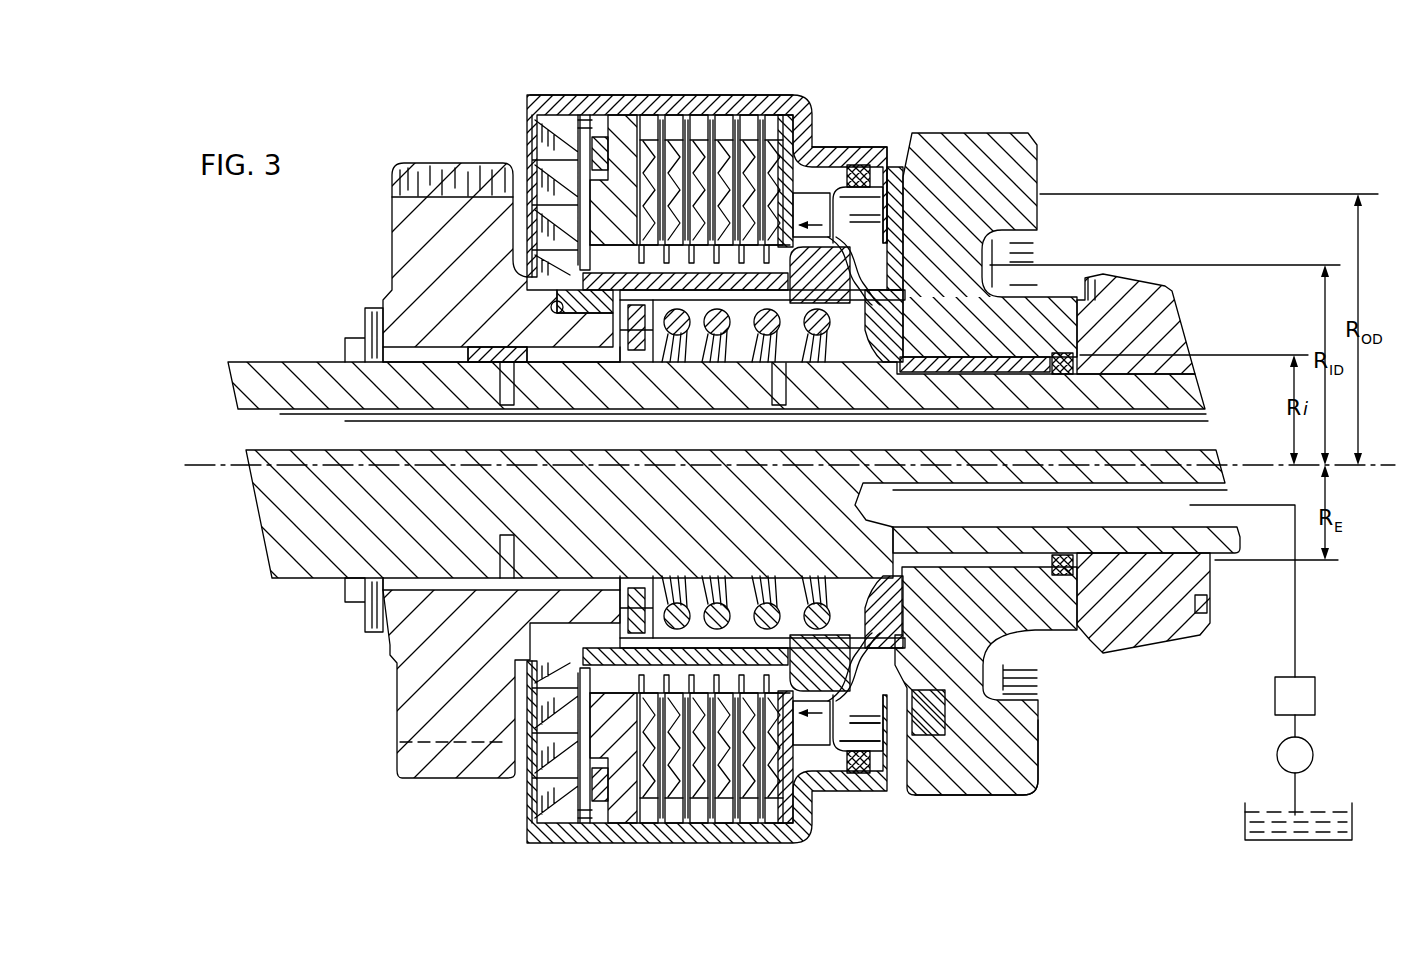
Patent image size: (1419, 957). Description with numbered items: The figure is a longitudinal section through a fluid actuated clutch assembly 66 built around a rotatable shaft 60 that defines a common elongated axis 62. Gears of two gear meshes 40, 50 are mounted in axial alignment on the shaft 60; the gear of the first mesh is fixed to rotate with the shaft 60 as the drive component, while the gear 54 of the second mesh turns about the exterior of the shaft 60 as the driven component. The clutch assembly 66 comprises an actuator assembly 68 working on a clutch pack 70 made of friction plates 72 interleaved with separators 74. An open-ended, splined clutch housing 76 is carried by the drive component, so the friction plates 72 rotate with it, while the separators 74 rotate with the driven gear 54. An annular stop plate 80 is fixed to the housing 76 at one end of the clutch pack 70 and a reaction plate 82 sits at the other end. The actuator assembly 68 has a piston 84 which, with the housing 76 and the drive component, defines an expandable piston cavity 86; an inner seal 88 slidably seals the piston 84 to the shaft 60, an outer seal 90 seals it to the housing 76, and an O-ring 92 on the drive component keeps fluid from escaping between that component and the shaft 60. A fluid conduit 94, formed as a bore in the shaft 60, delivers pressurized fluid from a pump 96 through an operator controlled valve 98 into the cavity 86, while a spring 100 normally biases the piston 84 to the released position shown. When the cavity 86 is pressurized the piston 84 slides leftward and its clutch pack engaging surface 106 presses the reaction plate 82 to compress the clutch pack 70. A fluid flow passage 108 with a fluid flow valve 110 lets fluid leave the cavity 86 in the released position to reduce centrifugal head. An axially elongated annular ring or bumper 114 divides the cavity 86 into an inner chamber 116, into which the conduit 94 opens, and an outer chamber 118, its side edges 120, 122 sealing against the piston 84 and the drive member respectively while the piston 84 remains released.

The gear mesh 40 is at (1012, 120).
The gear mesh 50 is at (380, 185).
The driven component 54 is at (398, 722).
The shaft 60 is at (278, 555).
The axis 62 is at (226, 466).
The clutch assembly 66 is at (928, 90).
The actuator assembly 68 is at (822, 755).
The clutch pack 70 is at (750, 80).
The friction plates 72 is at (712, 145).
The separators 74 is at (692, 770).
The clutch housing 76 is at (532, 104).
The stop plate 80 is at (597, 120).
The reaction plate 82 is at (790, 840).
The piston 84 is at (867, 790).
The piston cavity 86 is at (893, 225).
The inner seal 88 is at (893, 337).
The outer seal 90 is at (867, 165).
The O-ring 92 is at (1133, 652).
The fluid conduit 94 is at (1098, 522).
The pump 96 is at (1315, 752).
The valve 98 is at (1315, 688).
The spring 100 is at (813, 620).
The clutch pack engaging surface 106 is at (897, 757).
The fluid flow passage 108 is at (783, 108).
The fluid flow valve 110 is at (800, 200).
The annular ring or bumper 114 is at (1017, 707).
The inner chamber 116 is at (890, 622).
The outer chamber 118 is at (930, 725).
The side edge 120 is at (858, 270).
The side edge 122 is at (1003, 670).